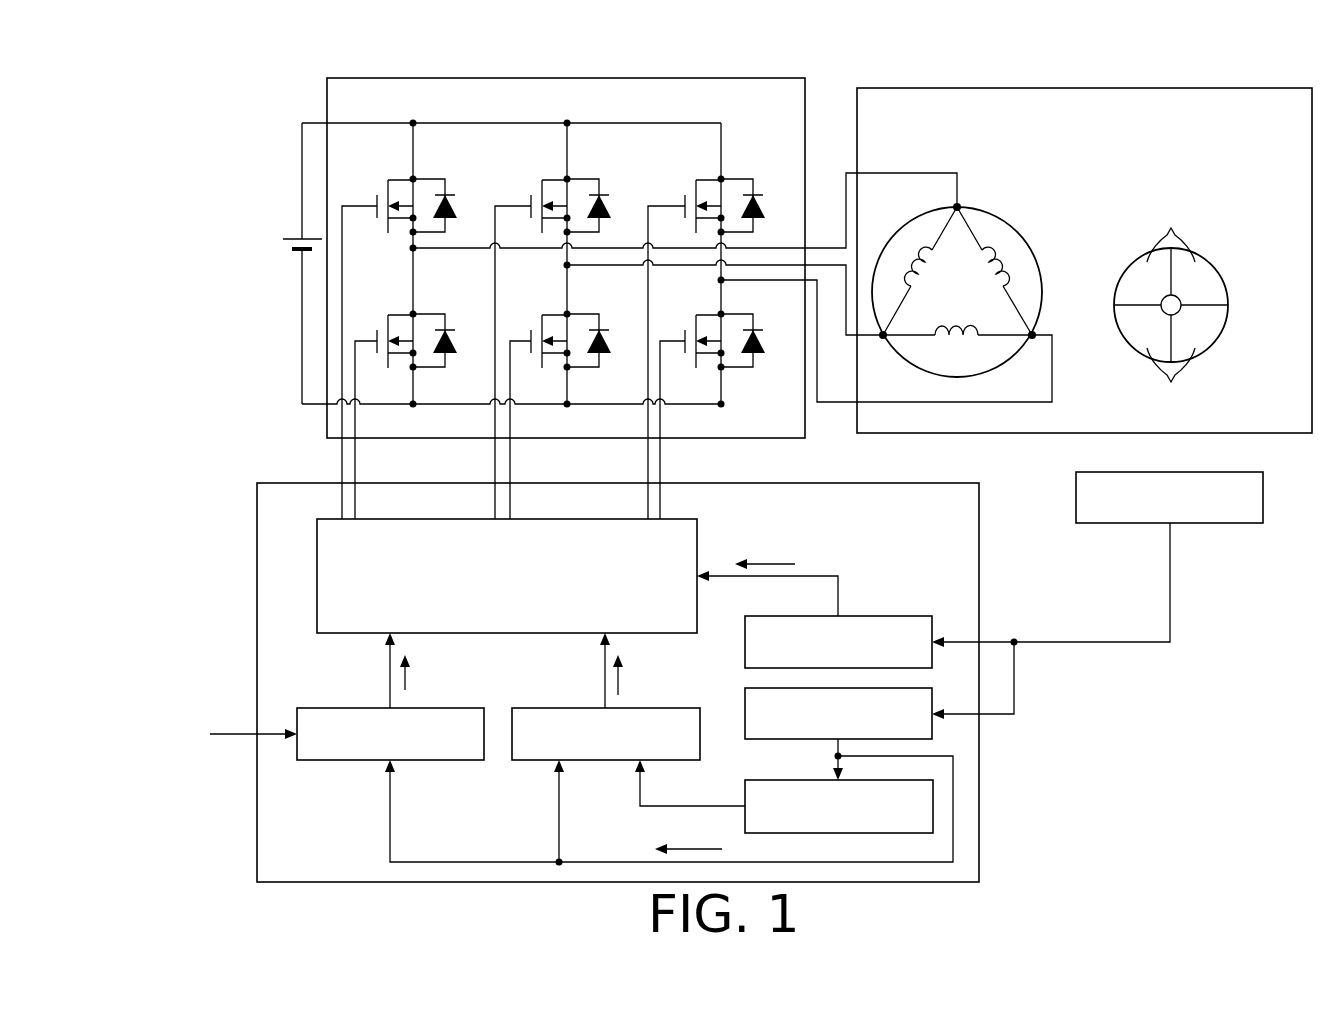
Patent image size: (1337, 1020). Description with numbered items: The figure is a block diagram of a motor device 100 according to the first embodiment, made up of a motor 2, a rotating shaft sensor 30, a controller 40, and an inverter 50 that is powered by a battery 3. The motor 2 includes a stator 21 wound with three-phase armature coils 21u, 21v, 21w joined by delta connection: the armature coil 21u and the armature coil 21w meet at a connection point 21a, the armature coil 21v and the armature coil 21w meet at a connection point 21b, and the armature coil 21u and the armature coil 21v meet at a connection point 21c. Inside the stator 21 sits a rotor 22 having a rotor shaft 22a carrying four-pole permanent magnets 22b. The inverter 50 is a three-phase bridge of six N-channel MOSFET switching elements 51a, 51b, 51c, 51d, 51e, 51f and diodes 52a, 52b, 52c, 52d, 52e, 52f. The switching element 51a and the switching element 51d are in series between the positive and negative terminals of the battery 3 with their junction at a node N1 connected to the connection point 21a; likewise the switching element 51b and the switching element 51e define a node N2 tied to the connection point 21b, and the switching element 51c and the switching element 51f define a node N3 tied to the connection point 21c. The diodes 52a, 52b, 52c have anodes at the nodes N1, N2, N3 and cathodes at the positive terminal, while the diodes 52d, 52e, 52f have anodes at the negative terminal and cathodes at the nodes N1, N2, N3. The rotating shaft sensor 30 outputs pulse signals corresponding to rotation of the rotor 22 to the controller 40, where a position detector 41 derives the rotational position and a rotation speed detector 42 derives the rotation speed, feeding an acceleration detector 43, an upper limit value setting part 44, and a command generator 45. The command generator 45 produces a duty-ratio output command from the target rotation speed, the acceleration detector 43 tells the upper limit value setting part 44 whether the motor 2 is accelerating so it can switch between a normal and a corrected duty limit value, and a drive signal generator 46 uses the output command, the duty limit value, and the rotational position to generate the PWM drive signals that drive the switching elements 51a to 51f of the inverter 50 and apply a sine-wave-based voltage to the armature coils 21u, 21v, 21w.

The motor device 100 is at (927, 78).
The motor 2 is at (1083, 88).
The battery 3 is at (298, 237).
The stator 21 is at (982, 279).
The connection point 21a is at (957, 207).
The connection point 21b is at (884, 340).
The connection point 21c is at (1034, 334).
The armature coil 21u is at (1004, 270).
The armature coil 21v is at (962, 342).
The armature coil 21w is at (916, 268).
The rotor 22 is at (1203, 309).
The rotor shaft 22a is at (1183, 305).
The permanent magnets 22b is at (1171, 309).
The rotating shaft sensor 30 is at (1112, 523).
The controller 40 is at (980, 800).
The position detector 41 is at (897, 616).
The rotation speed detector 42 is at (745, 697).
The acceleration detector 43 is at (780, 780).
The upper limit value setting part 44 is at (560, 708).
The command generator 45 is at (455, 708).
The drive signal generator 46 is at (697, 530).
The inverter 50 is at (685, 77).
The switching element 51a is at (388, 185).
The switching element 51b is at (542, 185).
The switching element 51c is at (696, 185).
The switching element 51d is at (386, 356).
The switching element 51e is at (540, 356).
The switching element 51f is at (694, 356).
The diode 52a is at (447, 196).
The diode 52b is at (601, 196).
The diode 52c is at (755, 196).
The diode 52d is at (447, 331).
The diode 52e is at (601, 331).
The diode 52f is at (755, 331).
The node N1 is at (413, 248).
The node N2 is at (567, 265).
The node N3 is at (721, 280).